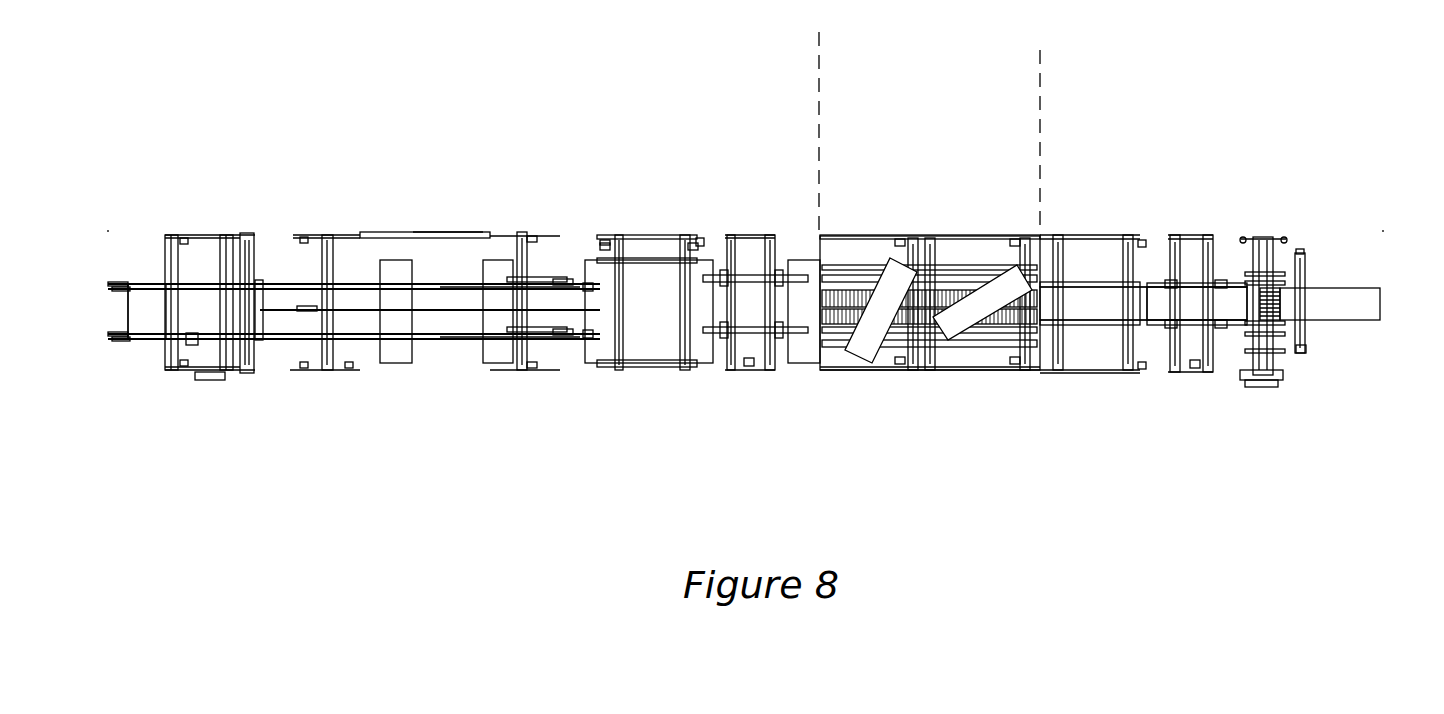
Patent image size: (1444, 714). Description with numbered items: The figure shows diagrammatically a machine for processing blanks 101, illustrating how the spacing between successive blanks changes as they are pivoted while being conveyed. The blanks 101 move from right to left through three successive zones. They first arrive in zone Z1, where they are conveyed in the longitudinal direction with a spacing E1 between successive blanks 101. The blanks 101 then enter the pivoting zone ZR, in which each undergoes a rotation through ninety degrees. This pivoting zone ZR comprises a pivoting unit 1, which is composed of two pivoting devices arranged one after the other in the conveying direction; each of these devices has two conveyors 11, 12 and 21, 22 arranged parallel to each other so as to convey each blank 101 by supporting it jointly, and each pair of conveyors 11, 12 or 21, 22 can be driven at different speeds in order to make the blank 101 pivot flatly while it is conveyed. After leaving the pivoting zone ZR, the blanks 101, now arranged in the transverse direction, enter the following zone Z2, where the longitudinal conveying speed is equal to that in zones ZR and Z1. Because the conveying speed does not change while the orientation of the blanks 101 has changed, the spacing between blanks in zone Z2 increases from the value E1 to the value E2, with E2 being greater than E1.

The pivoting unit 1 is at (892, 147).
The conveyor 11 is at (1004, 340).
The conveyor 12 is at (957, 325).
The conveyor 21 is at (839, 355).
The conveyor 22 is at (848, 335).
The blank 101 is at (398, 352).
The spacing E1 is at (1160, 272).
The spacing E2 is at (483, 233).
The zone Z1 is at (1277, 162).
The zone Z2 is at (377, 155).
The pivoting zone ZR is at (929, 132).